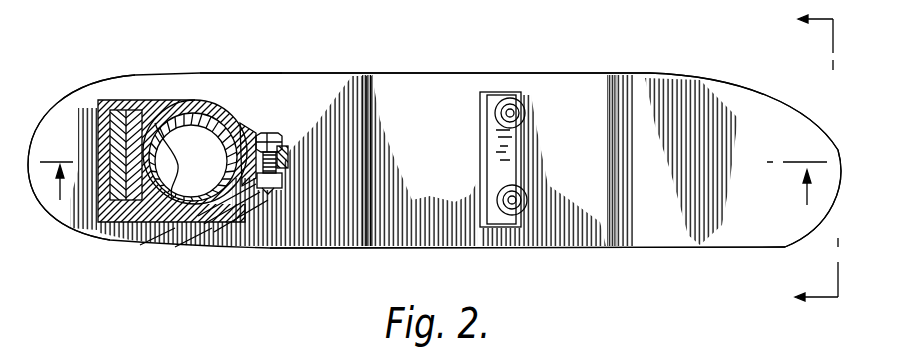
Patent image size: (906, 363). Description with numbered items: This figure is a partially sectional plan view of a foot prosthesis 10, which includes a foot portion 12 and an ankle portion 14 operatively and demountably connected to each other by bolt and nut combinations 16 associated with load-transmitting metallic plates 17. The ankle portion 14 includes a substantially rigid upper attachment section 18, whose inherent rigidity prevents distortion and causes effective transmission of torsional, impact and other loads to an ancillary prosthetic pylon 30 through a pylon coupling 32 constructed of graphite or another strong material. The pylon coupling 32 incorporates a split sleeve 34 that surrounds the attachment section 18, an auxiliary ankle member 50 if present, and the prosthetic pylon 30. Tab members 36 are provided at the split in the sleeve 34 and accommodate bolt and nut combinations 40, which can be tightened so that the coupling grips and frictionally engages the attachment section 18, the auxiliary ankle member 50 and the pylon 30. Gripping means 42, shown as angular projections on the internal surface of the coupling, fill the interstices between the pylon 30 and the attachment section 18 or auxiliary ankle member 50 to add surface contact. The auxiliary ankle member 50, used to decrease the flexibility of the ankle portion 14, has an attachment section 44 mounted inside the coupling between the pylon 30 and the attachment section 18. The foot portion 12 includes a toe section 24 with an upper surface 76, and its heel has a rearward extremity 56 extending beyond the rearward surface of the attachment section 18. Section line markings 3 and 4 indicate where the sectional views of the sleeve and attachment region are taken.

The foot prosthesis 10 is at (382, 265).
The foot portion 12 is at (657, 251).
The ankle portion 14 is at (437, 71).
The bolt and nut combinations 16 is at (514, 108).
The load-transmitting metallic plates 17 is at (497, 91).
The upper attachment section 18 is at (120, 98).
The toe section 24 is at (778, 210).
The ancillary prosthetic pylon 30 is at (207, 98).
The pylon coupling 32 is at (125, 96).
The split sleeve 34 is at (180, 102).
The tab members 36 is at (283, 165).
The bolt and nut combinations 40 is at (277, 195).
The gripping means 42 is at (170, 215).
The attachment section 44 is at (127, 238).
The auxiliary ankle member 50 is at (265, 72).
The rearward extremity 56 is at (47, 190).
The upper surface 76 is at (650, 110).
The section line 3- 3 is at (803, 159).
The section line 4- 4 is at (433, 170).